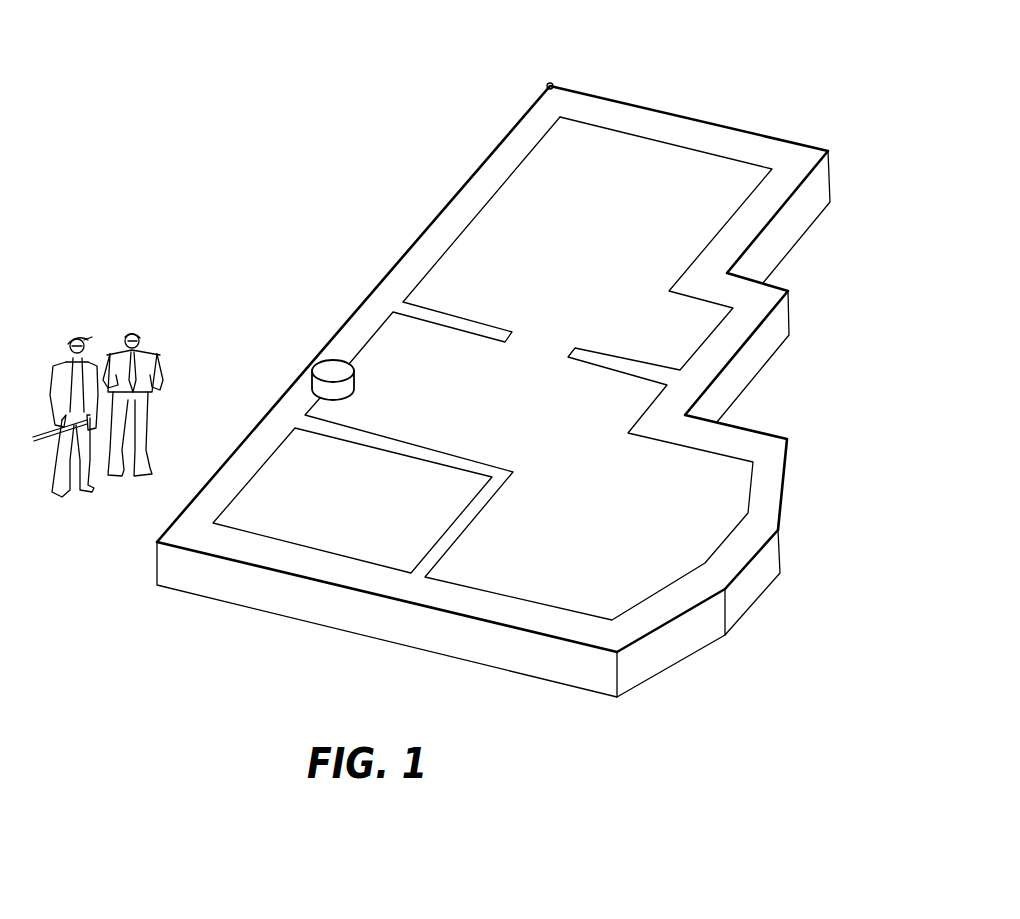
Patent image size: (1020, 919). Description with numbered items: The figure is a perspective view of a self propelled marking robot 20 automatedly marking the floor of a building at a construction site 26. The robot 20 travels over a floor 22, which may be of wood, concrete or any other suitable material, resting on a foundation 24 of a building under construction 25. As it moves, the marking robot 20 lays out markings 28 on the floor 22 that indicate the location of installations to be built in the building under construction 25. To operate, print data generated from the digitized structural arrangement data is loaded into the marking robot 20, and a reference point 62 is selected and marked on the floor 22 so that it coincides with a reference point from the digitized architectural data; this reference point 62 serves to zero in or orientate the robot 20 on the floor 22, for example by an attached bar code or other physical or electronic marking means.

The self propelled marking robot 20 is at (333, 360).
The floor 22 is at (600, 516).
The foundation 24 is at (757, 607).
The building under construction 25 is at (383, 267).
The construction site 26 is at (153, 250).
The markings 28 is at (427, 547).
The reference point 62 is at (547, 85).